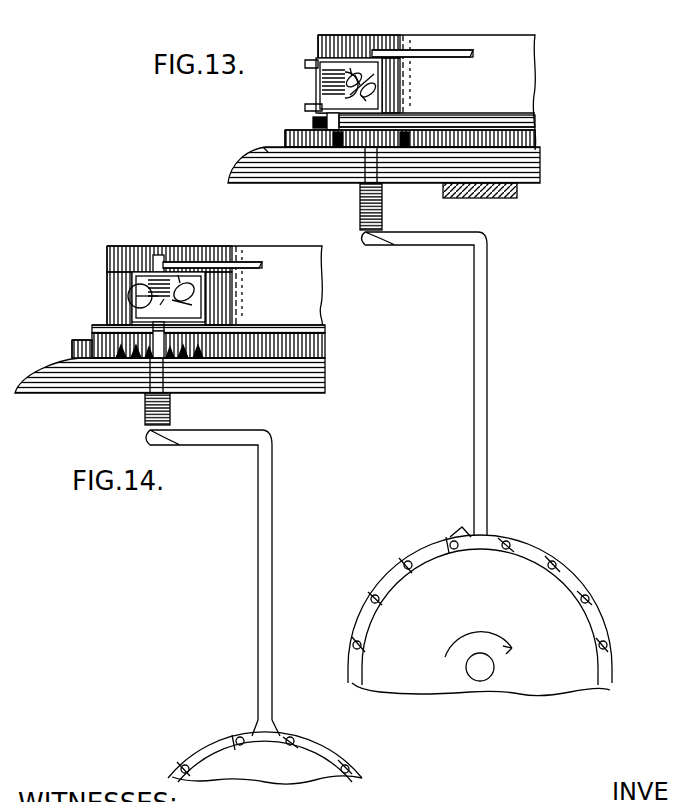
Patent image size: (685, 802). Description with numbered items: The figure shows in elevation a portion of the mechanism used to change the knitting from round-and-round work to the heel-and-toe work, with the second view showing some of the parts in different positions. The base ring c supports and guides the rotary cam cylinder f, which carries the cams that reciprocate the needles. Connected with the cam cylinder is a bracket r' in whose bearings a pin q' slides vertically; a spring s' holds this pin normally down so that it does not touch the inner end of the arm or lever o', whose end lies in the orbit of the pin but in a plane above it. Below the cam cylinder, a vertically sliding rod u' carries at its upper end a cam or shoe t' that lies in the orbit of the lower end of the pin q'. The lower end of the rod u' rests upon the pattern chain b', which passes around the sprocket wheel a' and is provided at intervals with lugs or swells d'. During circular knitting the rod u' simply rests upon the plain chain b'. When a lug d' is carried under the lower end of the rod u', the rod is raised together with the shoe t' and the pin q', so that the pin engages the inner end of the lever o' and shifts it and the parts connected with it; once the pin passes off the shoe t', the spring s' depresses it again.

In FIG. 13, the pin q' is at (309, 119).
In FIG. 14, the pin q' is at (167, 245).
In FIG. 13, the bracket r' is at (343, 85).
In FIG. 14, the bracket r' is at (183, 274).
In FIG. 14, the spring s' is at (123, 294).
In FIG. 13, the arm or lever o' is at (422, 67).
In FIG. 14, the arm or lever o' is at (214, 279).
In FIG. 13, the rotary cam cylinder f is at (427, 92).
In FIG. 14, the rotary cam cylinder f is at (214, 285).
In FIG. 13, the cam or shoe t' is at (410, 116).
In FIG. 14, the cam or shoe t' is at (198, 325).
In FIG. 13, the base ring c is at (538, 160).
In FIG. 14, the base ring c is at (176, 375).
In FIG. 13, the vertically sliding rod u' is at (438, 359).
In FIG. 14, the vertically sliding rod u' is at (222, 556).
In FIG. 13, the lug or swell d' is at (460, 520).
In FIG. 14, the lug or swell d' is at (276, 713).
In FIG. 13, the pattern chain b' is at (480, 594).
In FIG. 14, the pattern chain b' is at (264, 746).
In FIG. 13, the sprocket wheel a' is at (480, 615).
In FIG. 14, the sprocket wheel a' is at (265, 758).